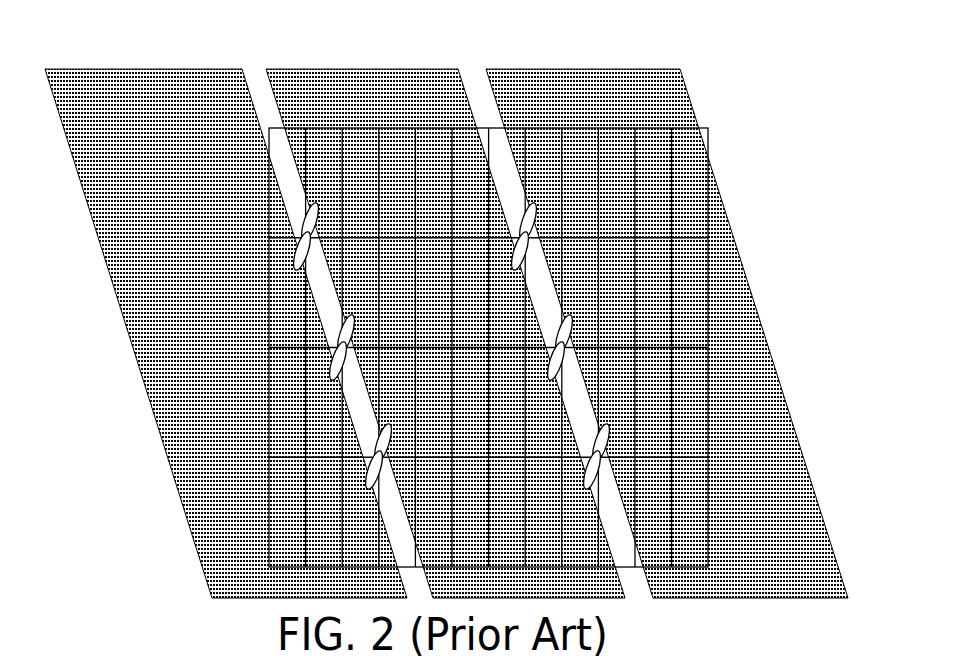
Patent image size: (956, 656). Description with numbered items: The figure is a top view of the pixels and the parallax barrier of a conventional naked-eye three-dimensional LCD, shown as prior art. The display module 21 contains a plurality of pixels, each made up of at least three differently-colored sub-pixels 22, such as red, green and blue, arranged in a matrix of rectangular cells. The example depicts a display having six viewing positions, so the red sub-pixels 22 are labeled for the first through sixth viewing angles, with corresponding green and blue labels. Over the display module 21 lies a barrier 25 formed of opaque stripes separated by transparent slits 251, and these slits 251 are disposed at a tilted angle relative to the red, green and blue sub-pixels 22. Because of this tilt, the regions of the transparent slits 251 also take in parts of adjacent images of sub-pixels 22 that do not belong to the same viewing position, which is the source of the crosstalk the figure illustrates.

The barrier 25 is at (590, 80).
The transparent slits 251 is at (257, 92).
The display module 21 is at (710, 140).
The sub-pixels 22 is at (700, 332).